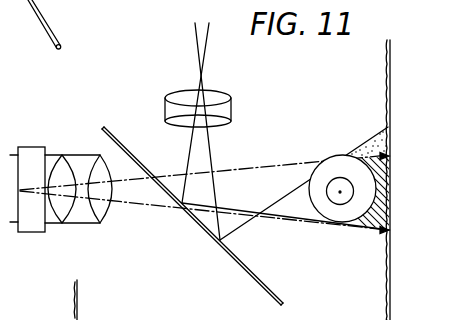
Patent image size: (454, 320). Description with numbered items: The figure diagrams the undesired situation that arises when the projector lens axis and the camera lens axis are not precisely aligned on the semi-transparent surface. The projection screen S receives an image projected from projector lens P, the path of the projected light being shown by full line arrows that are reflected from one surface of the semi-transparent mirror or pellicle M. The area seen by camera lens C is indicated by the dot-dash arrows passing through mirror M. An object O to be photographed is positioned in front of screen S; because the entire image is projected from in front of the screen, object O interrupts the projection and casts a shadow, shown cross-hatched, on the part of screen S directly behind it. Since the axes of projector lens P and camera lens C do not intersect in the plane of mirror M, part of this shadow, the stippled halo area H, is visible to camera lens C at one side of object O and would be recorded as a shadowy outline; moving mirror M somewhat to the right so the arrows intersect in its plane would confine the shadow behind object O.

The camera lens C is at (78, 155).
The projector lens P is at (233, 108).
The semi-transparent mirror or pellicle M is at (262, 287).
The shadow or halo area H is at (370, 142).
The object to be photographed O is at (342, 212).
The projection screen S is at (391, 90).